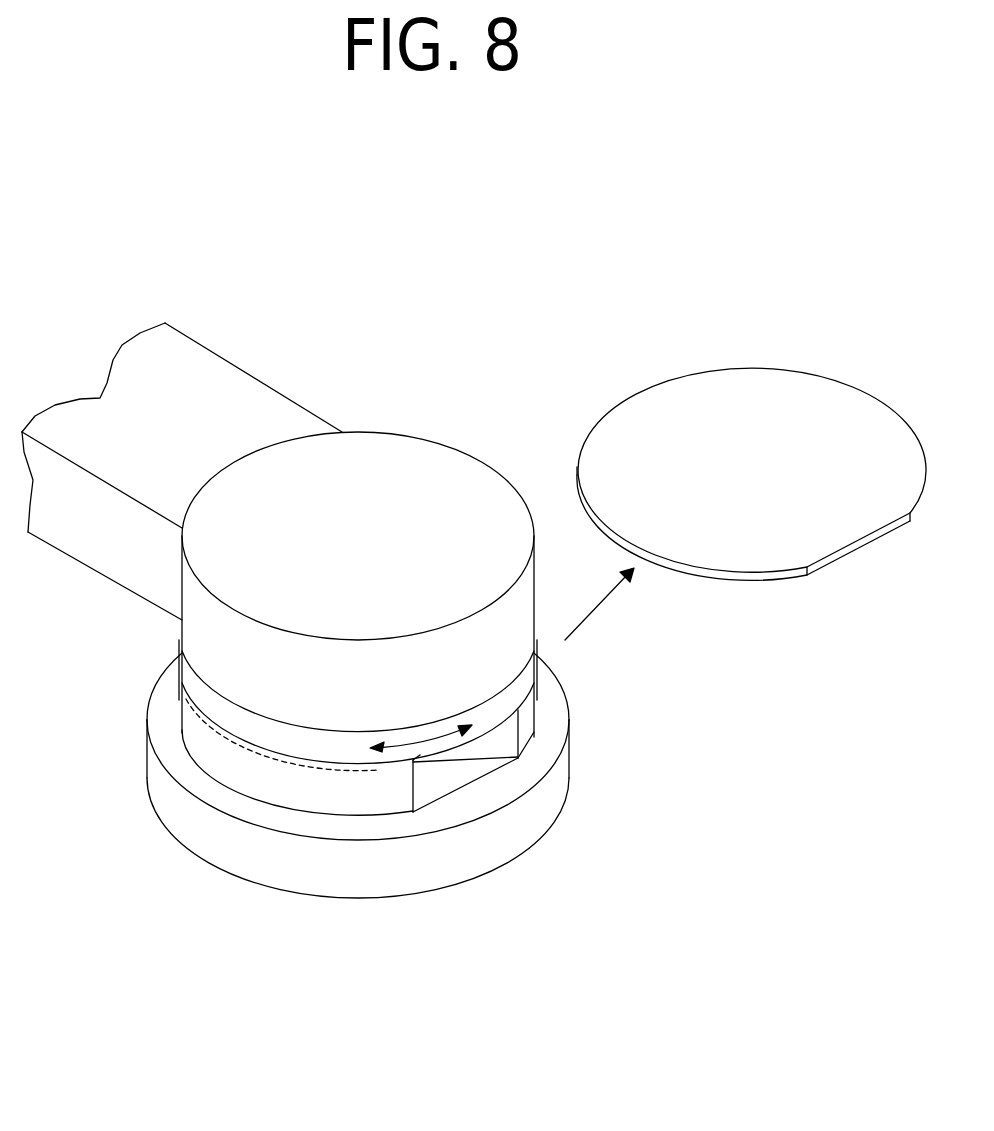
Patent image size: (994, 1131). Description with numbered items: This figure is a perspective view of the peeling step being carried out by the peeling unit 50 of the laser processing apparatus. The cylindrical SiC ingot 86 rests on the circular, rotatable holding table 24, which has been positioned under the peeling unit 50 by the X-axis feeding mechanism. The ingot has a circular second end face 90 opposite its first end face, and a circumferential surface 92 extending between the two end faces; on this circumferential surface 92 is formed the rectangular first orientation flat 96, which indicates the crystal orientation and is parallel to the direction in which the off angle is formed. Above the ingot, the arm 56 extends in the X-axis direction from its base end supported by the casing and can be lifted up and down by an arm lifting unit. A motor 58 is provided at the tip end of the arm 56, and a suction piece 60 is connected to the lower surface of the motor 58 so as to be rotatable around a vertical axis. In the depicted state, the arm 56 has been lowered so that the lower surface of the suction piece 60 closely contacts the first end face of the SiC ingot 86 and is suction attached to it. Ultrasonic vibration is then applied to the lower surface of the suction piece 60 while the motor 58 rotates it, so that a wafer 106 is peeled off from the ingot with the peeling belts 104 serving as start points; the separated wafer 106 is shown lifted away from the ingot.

The holding table 24 is at (215, 848).
The peeling unit 50 is at (396, 370).
The arm 56 is at (218, 372).
The motor 58 is at (430, 458).
The suction piece 60 is at (525, 683).
The SiC ingot 86 is at (538, 736).
The second end face 90 is at (220, 786).
The circumferential surface 92 is at (205, 748).
The first orientation flat 96 is at (472, 763).
The peeling belt 104 is at (378, 773).
The wafer 106 is at (656, 396).